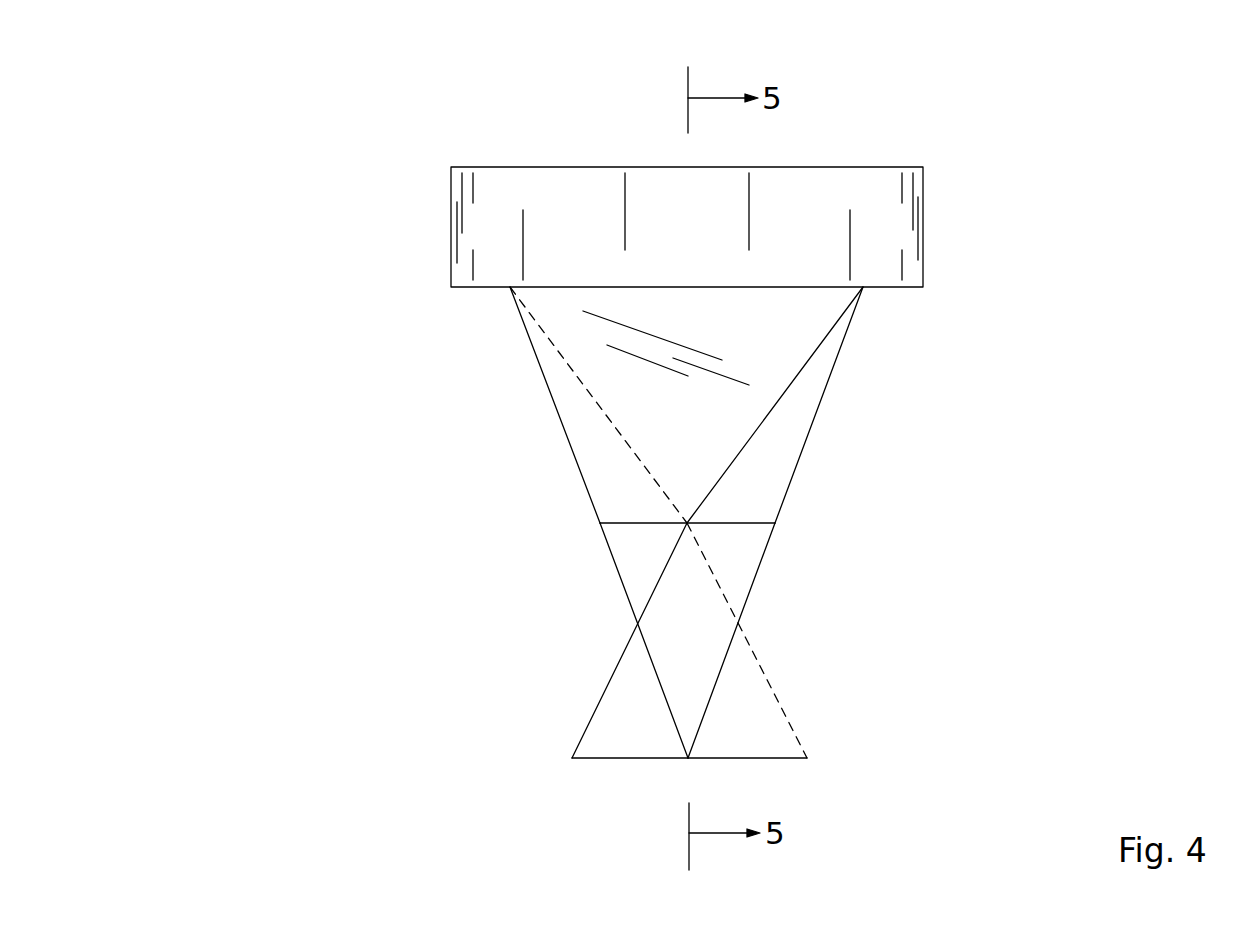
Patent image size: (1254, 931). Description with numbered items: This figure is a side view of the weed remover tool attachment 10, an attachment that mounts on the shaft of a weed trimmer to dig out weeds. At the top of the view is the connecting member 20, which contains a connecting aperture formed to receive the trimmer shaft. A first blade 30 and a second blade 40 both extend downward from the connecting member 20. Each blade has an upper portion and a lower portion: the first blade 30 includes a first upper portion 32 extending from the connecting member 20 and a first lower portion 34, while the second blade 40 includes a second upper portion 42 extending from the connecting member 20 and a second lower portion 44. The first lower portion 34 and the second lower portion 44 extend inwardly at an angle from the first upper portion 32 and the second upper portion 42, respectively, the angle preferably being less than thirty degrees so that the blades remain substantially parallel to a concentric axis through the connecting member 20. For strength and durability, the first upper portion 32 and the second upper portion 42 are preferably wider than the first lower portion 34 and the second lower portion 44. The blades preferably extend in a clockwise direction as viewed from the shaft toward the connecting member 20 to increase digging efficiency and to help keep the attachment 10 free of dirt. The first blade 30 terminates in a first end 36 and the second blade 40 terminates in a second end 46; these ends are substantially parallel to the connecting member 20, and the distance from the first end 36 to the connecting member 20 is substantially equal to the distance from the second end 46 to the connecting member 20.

The weed remover tool attachment 10 is at (203, 135).
The connecting member 20 is at (843, 177).
The first blade 30 is at (540, 410).
The first upper portion 32 is at (796, 321).
The first lower portion 34 is at (748, 700).
The first end 36 is at (758, 760).
The second blade 40 is at (772, 573).
The second upper portion 42 is at (760, 472).
The second lower portion 44 is at (633, 702).
The second end 46 is at (603, 760).